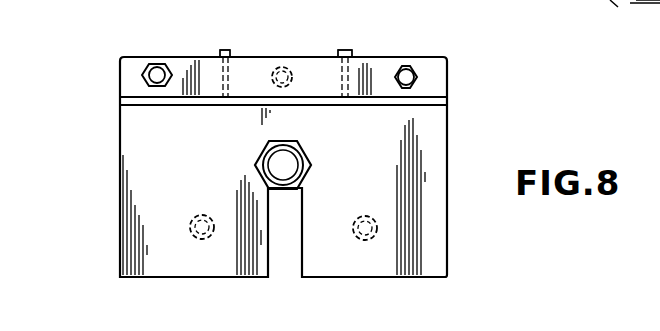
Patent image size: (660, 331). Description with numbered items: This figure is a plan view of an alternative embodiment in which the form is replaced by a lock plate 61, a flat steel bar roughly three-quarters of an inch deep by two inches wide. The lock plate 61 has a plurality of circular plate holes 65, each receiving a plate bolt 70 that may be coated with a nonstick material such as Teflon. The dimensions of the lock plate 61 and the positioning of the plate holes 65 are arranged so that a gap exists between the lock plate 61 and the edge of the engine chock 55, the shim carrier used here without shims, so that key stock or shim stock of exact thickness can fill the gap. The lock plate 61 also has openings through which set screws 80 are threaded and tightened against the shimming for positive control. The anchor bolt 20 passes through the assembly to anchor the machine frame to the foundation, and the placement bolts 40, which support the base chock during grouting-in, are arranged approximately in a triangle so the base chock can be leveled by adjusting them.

The anchor bolt 20 is at (313, 170).
The placement bolts 40 is at (282, 62).
The engine chock 55 is at (153, 180).
The lock plate 61 is at (198, 58).
The plate holes 65 is at (417, 77).
The plate bolt 70 is at (160, 63).
The set screw 80 is at (232, 55).